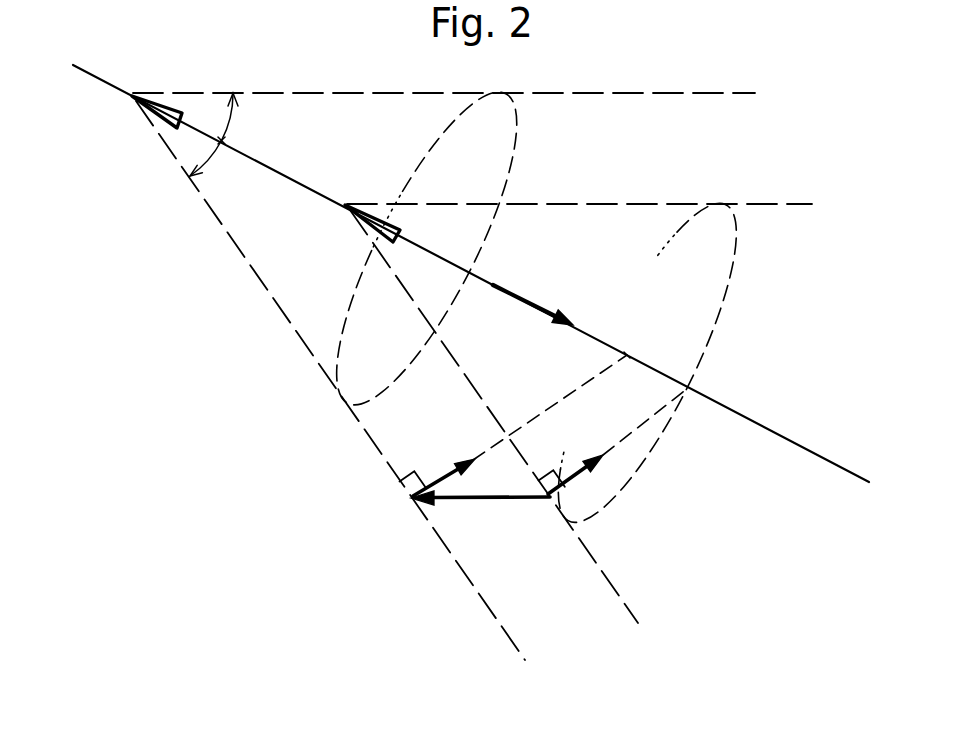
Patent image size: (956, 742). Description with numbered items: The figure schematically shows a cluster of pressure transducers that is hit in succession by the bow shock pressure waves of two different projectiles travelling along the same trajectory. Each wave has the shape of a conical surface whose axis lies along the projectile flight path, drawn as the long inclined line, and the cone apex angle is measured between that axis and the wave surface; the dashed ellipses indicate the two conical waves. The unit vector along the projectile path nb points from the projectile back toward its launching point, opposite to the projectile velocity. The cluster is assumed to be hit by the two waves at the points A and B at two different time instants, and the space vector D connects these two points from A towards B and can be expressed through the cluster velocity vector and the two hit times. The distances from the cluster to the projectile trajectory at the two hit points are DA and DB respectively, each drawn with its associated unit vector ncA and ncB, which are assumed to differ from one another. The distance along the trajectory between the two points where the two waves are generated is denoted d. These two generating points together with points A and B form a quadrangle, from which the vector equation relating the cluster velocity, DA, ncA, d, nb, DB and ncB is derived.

The first hit point A is at (547, 507).
The second hit point B is at (403, 505).
The space vector D is at (497, 505).
The distance along the trajectory d is at (650, 354).
The distance from cluster to trajectory at point A DA is at (645, 416).
The distance from cluster to trajectory at point B DB is at (550, 407).
The unit vector along the projectile path nb is at (530, 256).
The unit vector from trajectory to point A ncA is at (629, 453).
The unit vector from trajectory to point B ncB is at (415, 423).